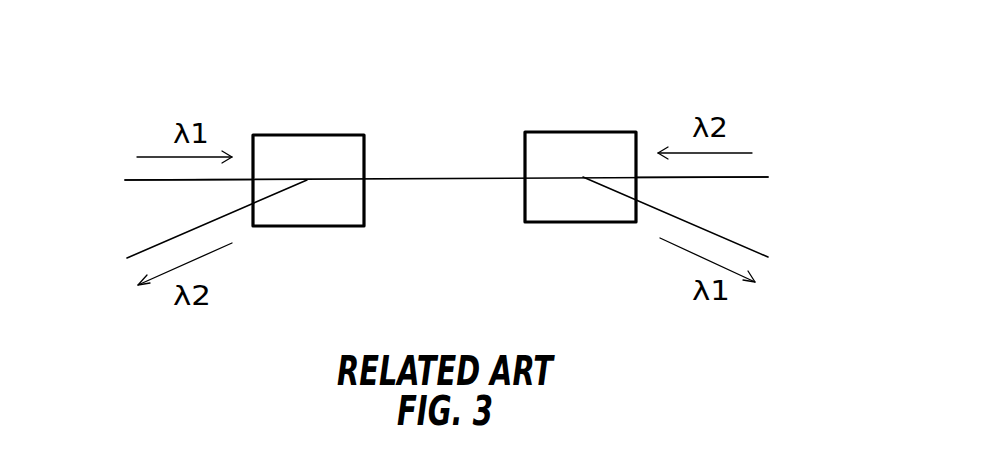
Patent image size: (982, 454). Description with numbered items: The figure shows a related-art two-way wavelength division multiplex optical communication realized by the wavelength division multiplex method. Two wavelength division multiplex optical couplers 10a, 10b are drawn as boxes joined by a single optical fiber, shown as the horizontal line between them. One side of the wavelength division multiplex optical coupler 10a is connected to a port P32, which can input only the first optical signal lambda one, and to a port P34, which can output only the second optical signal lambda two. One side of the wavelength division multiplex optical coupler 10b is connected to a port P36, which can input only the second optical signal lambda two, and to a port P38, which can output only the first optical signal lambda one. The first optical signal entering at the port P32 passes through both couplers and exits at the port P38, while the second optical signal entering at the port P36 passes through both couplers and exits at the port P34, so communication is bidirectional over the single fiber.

The wavelength division multiplex optical coupler 10a is at (297, 135).
The wavelength division multiplex optical coupler 10b is at (580, 132).
The port P32 is at (164, 176).
The port P34 is at (191, 223).
The port P36 is at (727, 176).
The port P38 is at (700, 227).